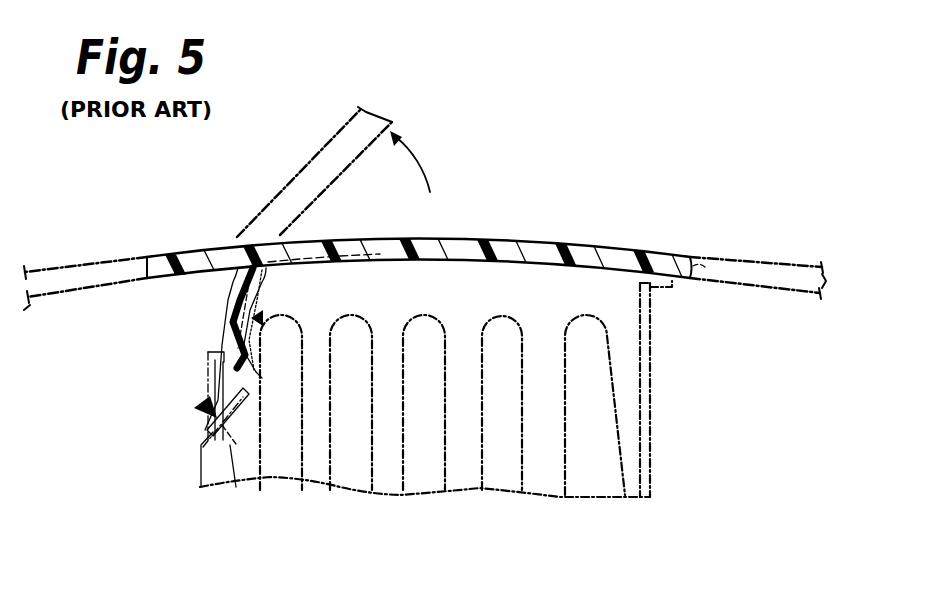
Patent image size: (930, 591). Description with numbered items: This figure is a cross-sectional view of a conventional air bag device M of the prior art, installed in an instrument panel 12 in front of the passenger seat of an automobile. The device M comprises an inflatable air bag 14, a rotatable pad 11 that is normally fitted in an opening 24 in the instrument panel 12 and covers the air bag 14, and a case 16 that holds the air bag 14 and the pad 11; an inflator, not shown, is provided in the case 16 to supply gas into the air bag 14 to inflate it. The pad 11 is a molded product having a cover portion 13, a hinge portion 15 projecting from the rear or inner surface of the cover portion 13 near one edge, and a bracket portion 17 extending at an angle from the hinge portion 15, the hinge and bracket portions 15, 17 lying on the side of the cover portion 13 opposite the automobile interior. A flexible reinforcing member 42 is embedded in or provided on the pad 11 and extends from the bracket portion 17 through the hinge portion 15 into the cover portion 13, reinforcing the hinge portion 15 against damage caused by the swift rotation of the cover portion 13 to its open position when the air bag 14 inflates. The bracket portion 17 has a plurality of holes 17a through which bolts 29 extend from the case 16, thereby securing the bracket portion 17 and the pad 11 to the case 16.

The rotatable pad 11 is at (616, 238).
The instrument panel 12 is at (748, 256).
The cover portion 13 is at (524, 249).
The inflatable air bag 14 is at (445, 425).
The hinge portion 15 is at (228, 320).
The case 16 is at (652, 470).
The bracket portion 17 is at (262, 378).
The holes 17a is at (200, 408).
The opening 24 is at (700, 271).
The bolts 29 is at (233, 486).
The flexible reinforcing member 42 is at (350, 255).
The air bag device M is at (658, 391).